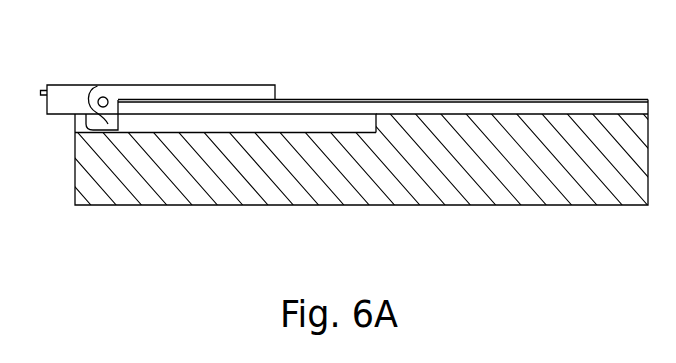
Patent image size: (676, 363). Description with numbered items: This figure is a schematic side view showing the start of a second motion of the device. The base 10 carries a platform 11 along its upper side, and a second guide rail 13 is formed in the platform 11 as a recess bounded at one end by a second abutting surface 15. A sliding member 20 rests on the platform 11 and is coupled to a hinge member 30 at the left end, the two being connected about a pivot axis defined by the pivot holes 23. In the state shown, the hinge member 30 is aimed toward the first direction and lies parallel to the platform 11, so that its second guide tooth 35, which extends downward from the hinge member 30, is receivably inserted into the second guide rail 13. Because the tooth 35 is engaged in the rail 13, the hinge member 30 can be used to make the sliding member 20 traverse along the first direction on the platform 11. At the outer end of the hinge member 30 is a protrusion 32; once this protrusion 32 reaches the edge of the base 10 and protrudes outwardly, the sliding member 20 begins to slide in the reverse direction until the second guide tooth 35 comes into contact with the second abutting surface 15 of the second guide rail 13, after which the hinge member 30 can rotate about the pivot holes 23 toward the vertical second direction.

The base 10 is at (258, 205).
The platform 11 is at (508, 115).
The second guide rail 13 is at (190, 125).
The second abutting surface 15 is at (376, 118).
The sliding member 20 is at (247, 95).
The pivot hole 23 is at (108, 101).
The hinge member 30 is at (64, 95).
The protrusion 32 is at (40, 88).
The second guide tooth 35 is at (102, 124).